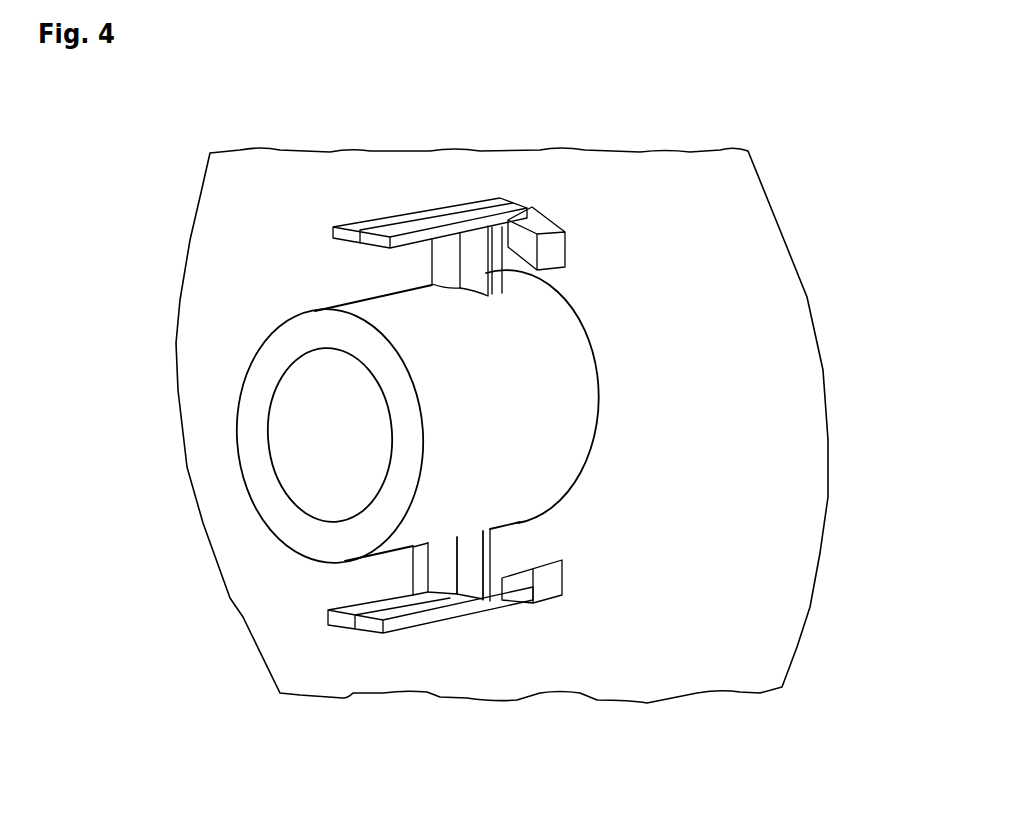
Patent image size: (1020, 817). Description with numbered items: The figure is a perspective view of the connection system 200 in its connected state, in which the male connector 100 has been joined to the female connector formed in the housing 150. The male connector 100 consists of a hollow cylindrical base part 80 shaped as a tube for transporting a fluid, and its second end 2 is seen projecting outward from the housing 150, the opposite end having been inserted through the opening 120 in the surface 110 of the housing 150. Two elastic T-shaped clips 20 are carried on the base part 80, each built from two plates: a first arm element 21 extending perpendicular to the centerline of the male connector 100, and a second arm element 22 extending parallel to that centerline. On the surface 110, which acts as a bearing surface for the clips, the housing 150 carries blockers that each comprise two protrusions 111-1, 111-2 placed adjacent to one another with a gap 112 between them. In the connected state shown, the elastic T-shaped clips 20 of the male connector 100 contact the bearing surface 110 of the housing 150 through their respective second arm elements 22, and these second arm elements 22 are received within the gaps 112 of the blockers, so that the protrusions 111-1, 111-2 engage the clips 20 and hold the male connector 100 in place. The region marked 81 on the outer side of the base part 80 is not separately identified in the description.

The second end 2 is at (287, 307).
The elastic T-shaped clip 20 is at (432, 266).
The first arm element 21 is at (475, 277).
The second arm element 22 is at (472, 202).
The hollow cylindrical base part 80 is at (504, 414).
The outer circumferential surface 81 is at (370, 310).
The male connector 100 is at (275, 508).
The surface 110 is at (566, 627).
The protrusion 111-1 is at (420, 562).
The protrusion 111-2 is at (548, 242).
The gap 112 is at (500, 238).
The opening 120 is at (585, 468).
The housing 150 is at (696, 296).
The connection system 200 is at (515, 131).